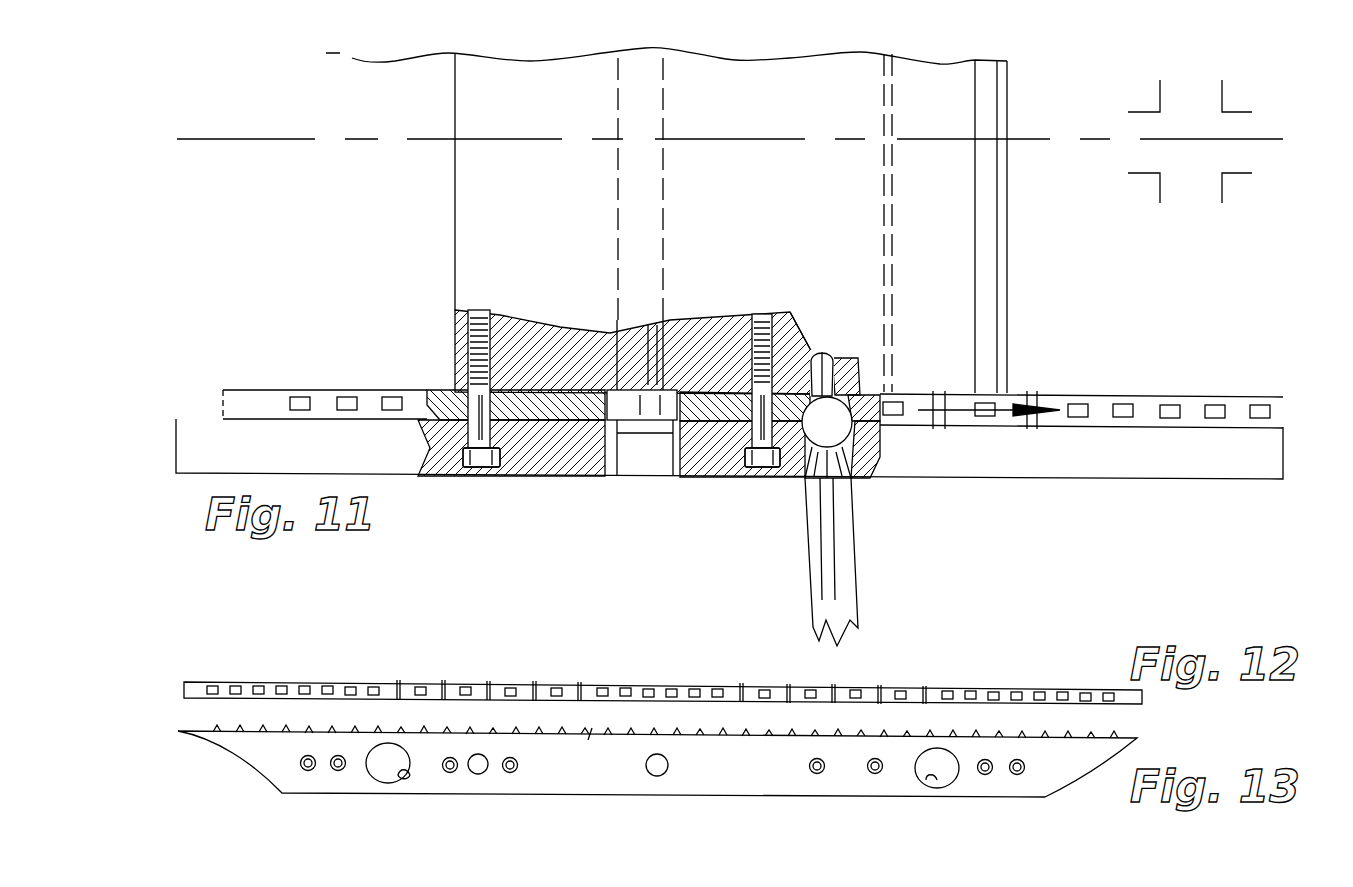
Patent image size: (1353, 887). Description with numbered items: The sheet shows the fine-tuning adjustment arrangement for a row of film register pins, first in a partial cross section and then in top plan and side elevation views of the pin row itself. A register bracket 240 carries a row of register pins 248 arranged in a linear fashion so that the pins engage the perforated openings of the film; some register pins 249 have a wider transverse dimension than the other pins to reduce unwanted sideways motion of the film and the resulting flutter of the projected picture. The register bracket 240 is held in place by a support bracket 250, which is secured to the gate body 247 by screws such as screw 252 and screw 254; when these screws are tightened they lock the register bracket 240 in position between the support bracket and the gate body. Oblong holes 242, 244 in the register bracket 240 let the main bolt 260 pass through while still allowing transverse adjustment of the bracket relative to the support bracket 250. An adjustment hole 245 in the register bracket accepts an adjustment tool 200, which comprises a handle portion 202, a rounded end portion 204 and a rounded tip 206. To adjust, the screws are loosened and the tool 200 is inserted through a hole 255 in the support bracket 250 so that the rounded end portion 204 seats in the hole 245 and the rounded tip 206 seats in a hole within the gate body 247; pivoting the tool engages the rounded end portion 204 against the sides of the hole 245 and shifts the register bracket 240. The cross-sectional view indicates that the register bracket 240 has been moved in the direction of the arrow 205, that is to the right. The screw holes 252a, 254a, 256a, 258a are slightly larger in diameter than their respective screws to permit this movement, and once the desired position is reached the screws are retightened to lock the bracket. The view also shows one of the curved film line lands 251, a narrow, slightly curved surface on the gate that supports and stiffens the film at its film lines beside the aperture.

In FIG. 11, the adjustment tool 200 is at (828, 472).
In FIG. 11, the handle portion 202 is at (858, 530).
In FIG. 11, the rounded end portion 204 is at (850, 428).
In FIG. 11, the arrow 205 is at (1005, 407).
In FIG. 11, the rounded tip 206 is at (822, 352).
In FIG. 11, the register bracket 240 is at (283, 358).
In FIG. 12, the register bracket 240 is at (215, 660).
In FIG. 13, the register bracket 240 is at (400, 806).
In FIG. 11, the oblong hole 242 is at (700, 440).
In FIG. 13, the oblong hole 242 is at (400, 778).
In FIG. 13, the oblong hole 244 is at (940, 778).
In FIG. 11, the adjustment hole 245 is at (845, 362).
In FIG. 13, the adjustment hole 245 is at (480, 774).
In FIG. 11, the gate body 247 is at (462, 330).
In FIG. 11, the register pins 248 is at (1230, 376).
In FIG. 12, the register pins 248 is at (1065, 655).
In FIG. 13, the register pins 248 is at (1085, 740).
In FIG. 11, the register pins 249 is at (1045, 455).
In FIG. 12, the register pins 249 is at (890, 658).
In FIG. 13, the register pins 249 is at (590, 735).
In FIG. 11, the support bracket 250 is at (1248, 212).
In FIG. 11, the film line lands 251 is at (1003, 118).
In FIG. 11, the screw 252 is at (530, 500).
In FIG. 11, the hole 252a is at (481, 457).
In FIG. 13, the hole 252a is at (338, 772).
In FIG. 11, the screw 254 is at (745, 385).
In FIG. 11, the hole 254a is at (800, 330).
In FIG. 13, the hole 254a is at (450, 773).
In FIG. 11, the hole 255 is at (780, 462).
In FIG. 13, the hole 256a is at (868, 772).
In FIG. 13, the hole 258a is at (985, 775).
In FIG. 11, the main bolt 260 is at (630, 430).